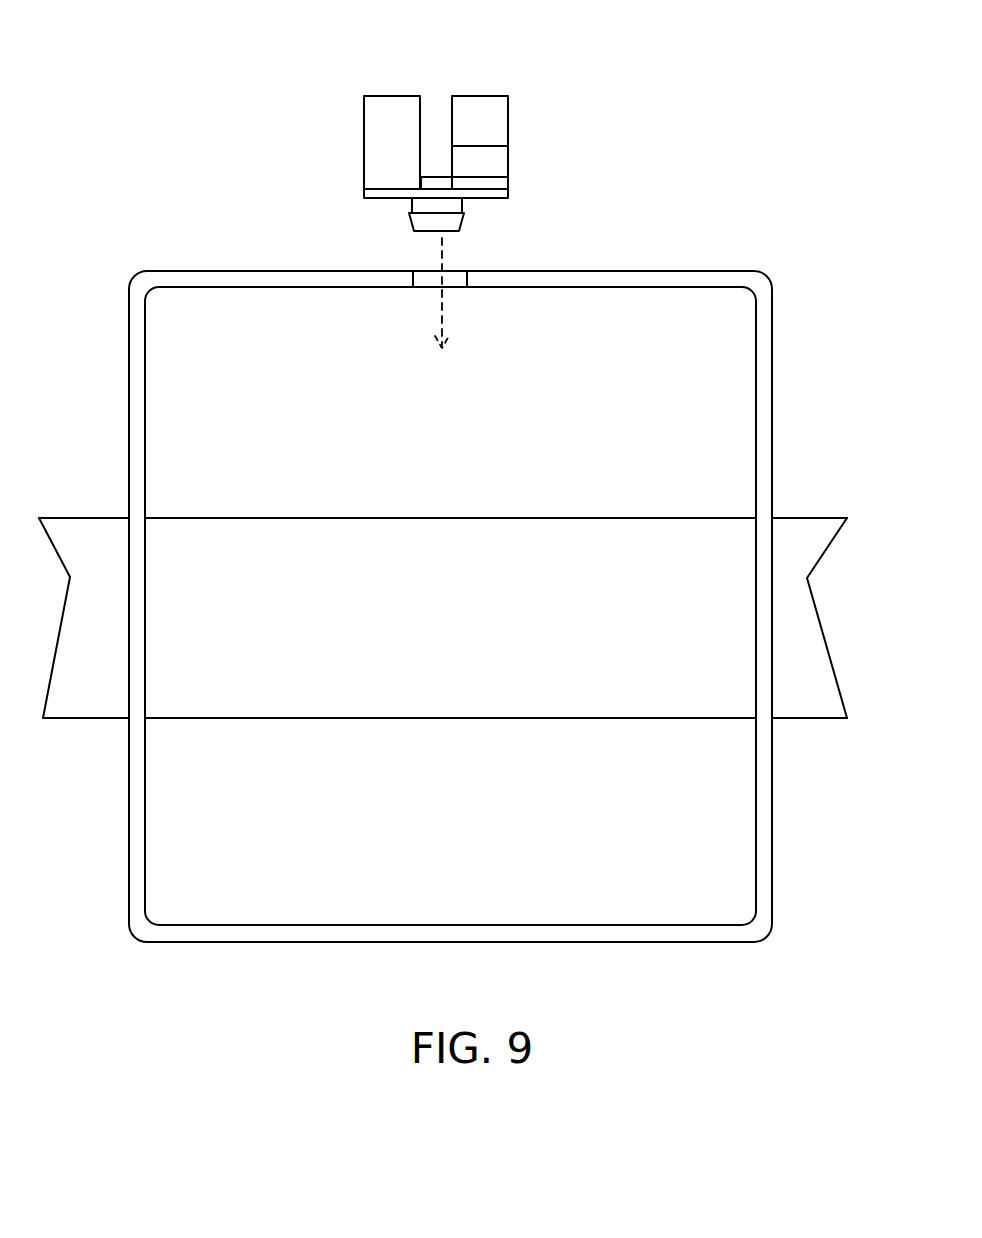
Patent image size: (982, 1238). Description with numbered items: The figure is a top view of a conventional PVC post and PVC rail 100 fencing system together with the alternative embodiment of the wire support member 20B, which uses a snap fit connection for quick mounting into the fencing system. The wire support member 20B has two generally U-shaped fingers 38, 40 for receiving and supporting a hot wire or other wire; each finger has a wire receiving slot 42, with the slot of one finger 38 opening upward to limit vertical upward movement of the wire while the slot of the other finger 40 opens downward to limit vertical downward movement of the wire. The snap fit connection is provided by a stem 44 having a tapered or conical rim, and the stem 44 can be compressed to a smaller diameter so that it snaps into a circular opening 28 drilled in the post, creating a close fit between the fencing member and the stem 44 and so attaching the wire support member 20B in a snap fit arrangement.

The wire support member 20B is at (444, 135).
The finger 38 is at (372, 130).
The finger 40 is at (505, 122).
The wire receiving slot 42 is at (503, 169).
The stem 44 is at (462, 203).
The circular opening 28 is at (432, 270).
The PVC rail 100 is at (810, 703).